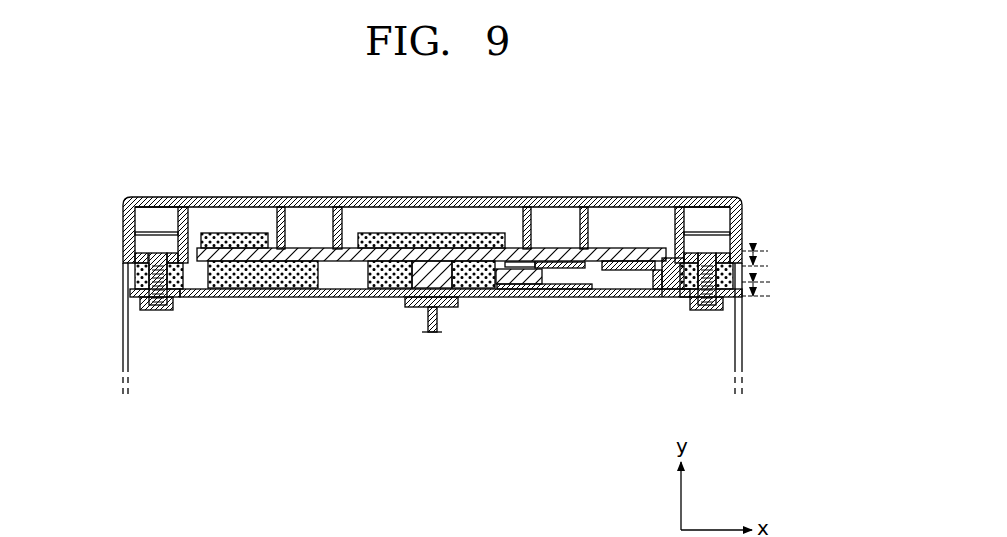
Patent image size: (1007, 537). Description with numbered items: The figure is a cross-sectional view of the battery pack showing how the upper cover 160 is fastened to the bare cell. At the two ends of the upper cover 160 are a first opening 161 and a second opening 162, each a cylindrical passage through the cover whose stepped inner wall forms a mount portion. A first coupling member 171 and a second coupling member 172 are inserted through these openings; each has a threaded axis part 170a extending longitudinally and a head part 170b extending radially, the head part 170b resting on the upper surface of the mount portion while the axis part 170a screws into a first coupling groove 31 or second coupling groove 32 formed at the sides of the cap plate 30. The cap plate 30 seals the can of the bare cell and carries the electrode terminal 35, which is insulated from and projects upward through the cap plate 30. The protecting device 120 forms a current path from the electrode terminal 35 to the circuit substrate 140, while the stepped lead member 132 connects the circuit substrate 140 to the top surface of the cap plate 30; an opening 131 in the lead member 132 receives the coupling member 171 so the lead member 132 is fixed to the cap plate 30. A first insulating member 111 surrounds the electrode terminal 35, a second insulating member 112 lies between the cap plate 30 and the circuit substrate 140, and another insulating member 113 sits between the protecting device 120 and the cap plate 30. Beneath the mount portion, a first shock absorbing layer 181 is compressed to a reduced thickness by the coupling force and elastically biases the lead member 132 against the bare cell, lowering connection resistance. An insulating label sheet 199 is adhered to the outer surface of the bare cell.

The upper cover 160 is at (432, 199).
The first opening 161 is at (707, 212).
The second opening 162 is at (155, 212).
The first coupling member 171 is at (715, 222).
The second coupling member 172 is at (150, 224).
The axis part 170a is at (140, 298).
The head part 170b is at (145, 243).
The cap plate 30 is at (141, 288).
The first coupling groove 31 is at (703, 312).
The second coupling groove 32 is at (160, 311).
The electrode terminal 35 is at (447, 307).
The first insulating member 111 is at (388, 297).
The second insulating member 112 is at (258, 289).
The insulating member 113 is at (538, 292).
The protecting device 120 is at (510, 290).
The opening 131 is at (677, 280).
The lead member 132 is at (622, 270).
The circuit substrate 140 is at (577, 290).
The first shock absorbing layer 181 is at (190, 297).
The insulating label sheet 199 is at (124, 351).